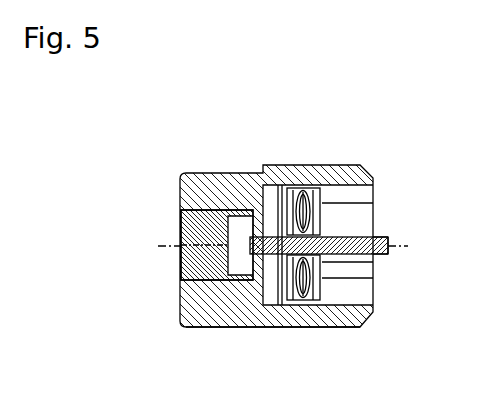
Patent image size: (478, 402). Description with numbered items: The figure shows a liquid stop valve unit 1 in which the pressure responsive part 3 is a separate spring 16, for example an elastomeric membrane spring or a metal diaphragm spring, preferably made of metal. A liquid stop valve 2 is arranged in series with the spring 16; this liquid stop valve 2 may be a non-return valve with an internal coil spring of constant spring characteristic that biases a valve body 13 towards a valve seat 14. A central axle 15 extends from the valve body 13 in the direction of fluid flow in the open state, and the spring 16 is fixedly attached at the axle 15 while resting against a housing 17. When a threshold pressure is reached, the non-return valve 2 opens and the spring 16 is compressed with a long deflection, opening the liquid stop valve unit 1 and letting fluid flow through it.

The liquid stop valve unit 1 is at (250, 131).
The liquid stop valve 2 is at (220, 173).
The pressure responsive part 3 is at (318, 178).
The spring 16 is at (318, 178).
The valve body 13 is at (193, 327).
The valve seat 14 is at (181, 208).
The central axle 15 is at (393, 269).
The housing 17 is at (345, 213).